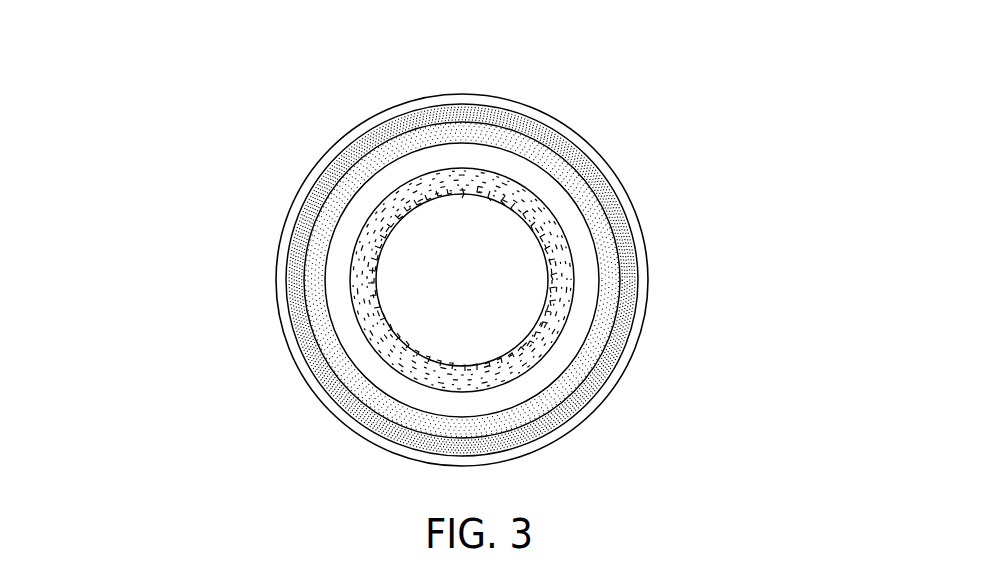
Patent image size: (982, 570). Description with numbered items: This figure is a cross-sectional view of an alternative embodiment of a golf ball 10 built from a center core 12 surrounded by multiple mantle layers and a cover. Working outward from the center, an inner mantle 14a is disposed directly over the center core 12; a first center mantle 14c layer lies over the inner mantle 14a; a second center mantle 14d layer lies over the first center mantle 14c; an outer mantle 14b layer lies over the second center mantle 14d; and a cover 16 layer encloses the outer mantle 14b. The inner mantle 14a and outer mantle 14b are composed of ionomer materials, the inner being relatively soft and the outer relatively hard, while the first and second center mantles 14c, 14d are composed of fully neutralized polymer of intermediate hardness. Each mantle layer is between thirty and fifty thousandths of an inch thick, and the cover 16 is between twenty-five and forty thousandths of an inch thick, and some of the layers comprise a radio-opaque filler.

The golf ball 10 is at (684, 208).
The center core 12 is at (537, 280).
The inner mantle 14a is at (365, 320).
The outer mantle 14b is at (398, 124).
The first center mantle 14c is at (337, 278).
The second center mantle 14d is at (332, 203).
The cover 16 is at (558, 118).